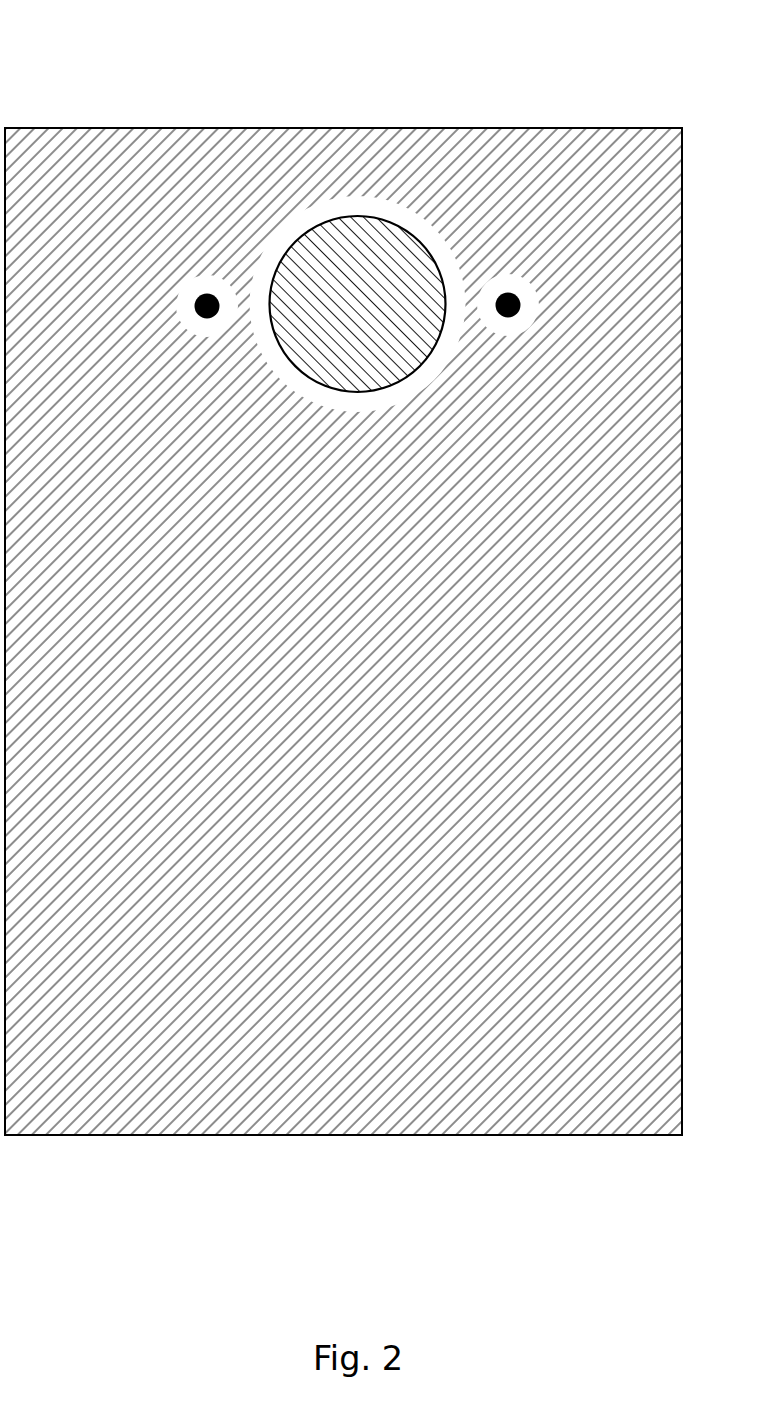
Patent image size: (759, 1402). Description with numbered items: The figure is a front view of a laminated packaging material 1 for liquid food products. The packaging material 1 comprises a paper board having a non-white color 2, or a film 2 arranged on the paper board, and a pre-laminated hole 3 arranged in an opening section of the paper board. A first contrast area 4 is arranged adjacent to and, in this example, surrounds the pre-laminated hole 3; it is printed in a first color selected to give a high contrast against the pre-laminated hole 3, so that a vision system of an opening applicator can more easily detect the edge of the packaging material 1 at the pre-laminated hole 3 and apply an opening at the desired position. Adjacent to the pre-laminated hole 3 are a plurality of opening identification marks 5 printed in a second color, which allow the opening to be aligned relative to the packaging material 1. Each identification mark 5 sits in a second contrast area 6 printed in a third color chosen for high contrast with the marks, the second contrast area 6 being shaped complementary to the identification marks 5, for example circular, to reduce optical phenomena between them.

The laminated packaging material 1 is at (343, 568).
The paper board having a non-white color or film 2 is at (343, 631).
The pre-laminated hole 3 is at (355, 392).
The first contrast area 4 is at (252, 352).
The opening identification marks 5 is at (194, 300).
The second contrast area 6 is at (185, 328).